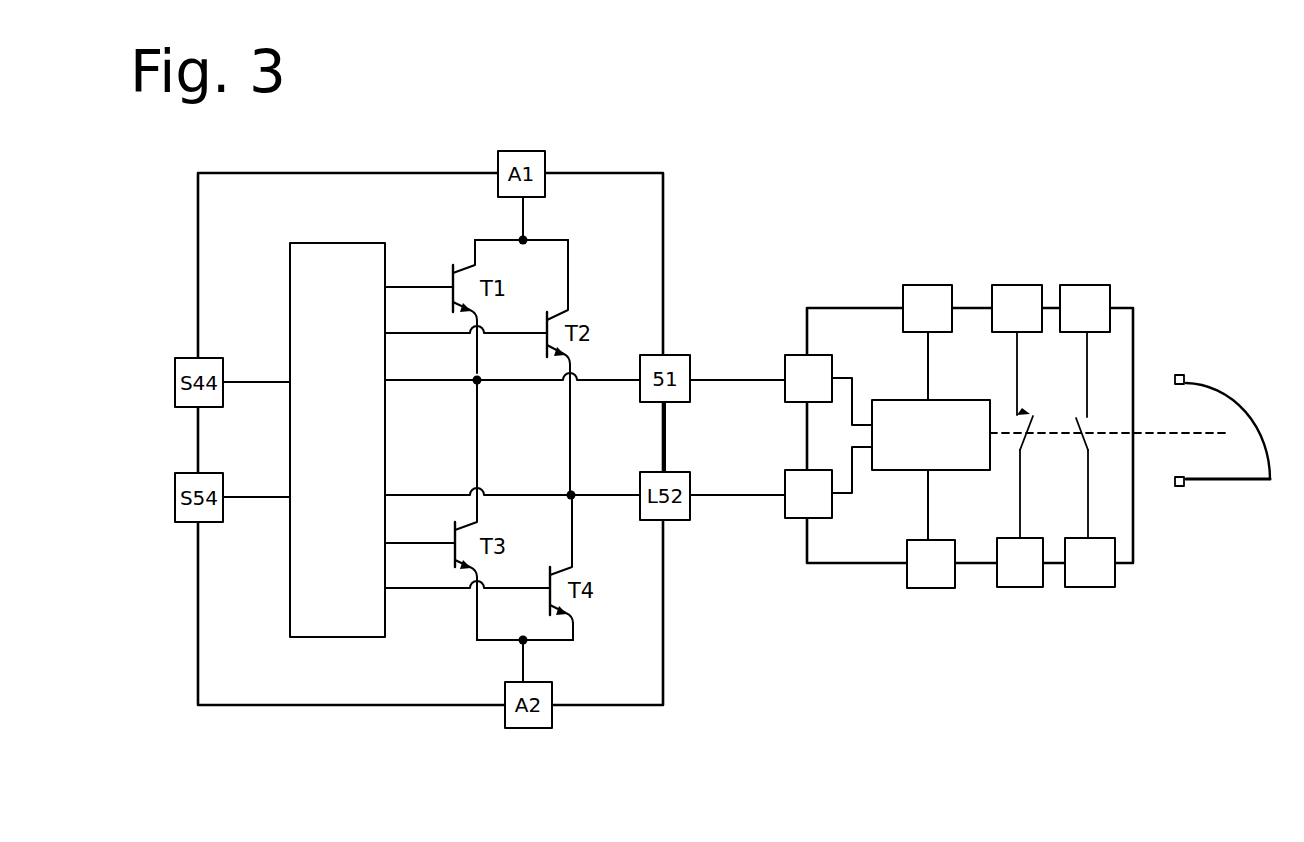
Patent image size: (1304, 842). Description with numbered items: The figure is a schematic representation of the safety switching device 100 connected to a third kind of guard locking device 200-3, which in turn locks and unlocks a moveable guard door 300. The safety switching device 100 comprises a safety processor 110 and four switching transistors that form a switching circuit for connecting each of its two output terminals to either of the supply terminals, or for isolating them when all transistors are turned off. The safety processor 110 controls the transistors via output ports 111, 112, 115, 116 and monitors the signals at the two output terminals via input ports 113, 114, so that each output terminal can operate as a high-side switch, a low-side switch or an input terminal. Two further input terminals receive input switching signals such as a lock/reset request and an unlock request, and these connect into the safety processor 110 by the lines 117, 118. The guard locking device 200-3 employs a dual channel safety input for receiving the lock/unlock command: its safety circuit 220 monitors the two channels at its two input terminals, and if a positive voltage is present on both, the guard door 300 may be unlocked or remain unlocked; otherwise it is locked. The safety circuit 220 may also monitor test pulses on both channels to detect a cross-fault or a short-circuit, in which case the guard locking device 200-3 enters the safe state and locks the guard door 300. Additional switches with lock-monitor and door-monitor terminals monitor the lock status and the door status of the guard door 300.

The safety switching device 100 is at (252, 753).
The safety processor 110 is at (310, 256).
The output port 111 is at (386, 287).
The output port 112 is at (386, 333).
The input port 113 is at (386, 380).
The input port 114 is at (386, 495).
The output port 115 is at (386, 543).
The output port 116 is at (386, 588).
The input line from S44 117 is at (288, 381).
The input line from S54 118 is at (288, 496).
The safety circuit 220 is at (912, 399).
The guard locking device 200-3 is at (1005, 495).
The guard door 300 is at (1242, 497).